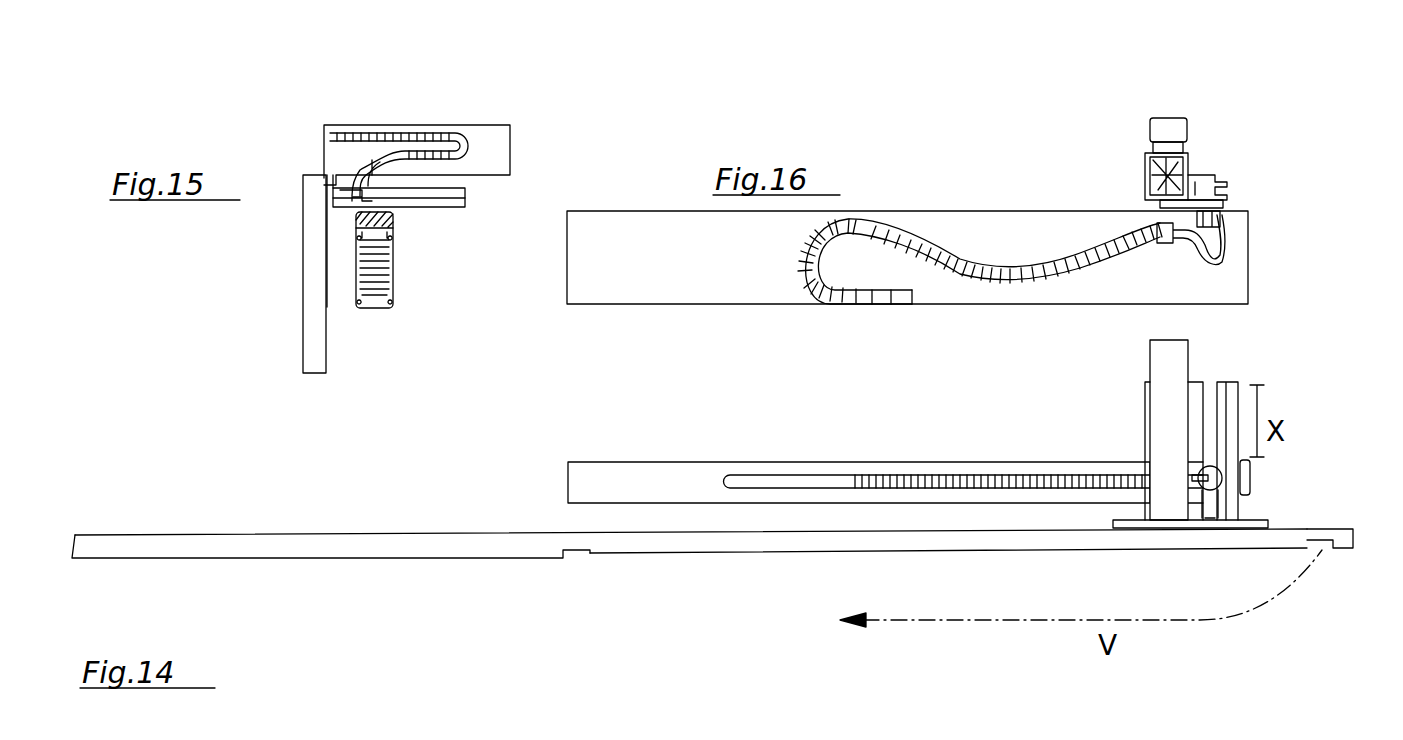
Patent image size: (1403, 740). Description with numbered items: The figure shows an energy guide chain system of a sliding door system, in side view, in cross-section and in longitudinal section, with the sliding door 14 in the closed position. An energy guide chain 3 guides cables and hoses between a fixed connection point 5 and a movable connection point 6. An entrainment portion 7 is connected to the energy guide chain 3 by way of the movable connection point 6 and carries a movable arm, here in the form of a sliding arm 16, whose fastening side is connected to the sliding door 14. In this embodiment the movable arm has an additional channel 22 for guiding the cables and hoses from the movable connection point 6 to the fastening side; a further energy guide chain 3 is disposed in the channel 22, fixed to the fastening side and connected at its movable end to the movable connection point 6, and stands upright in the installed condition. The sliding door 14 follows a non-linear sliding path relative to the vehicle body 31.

In FIG. 15, the energy guide chain 3 is at (369, 130).
In FIG. 16, the energy guide chain 3 is at (1017, 281).
In FIG. 14, the energy guide chain 3 is at (1030, 477).
In FIG. 15, the fixed connection point 5 is at (330, 138).
In FIG. 15, the movable connection point 6 is at (400, 157).
In FIG. 14, the entrainment portion 7 is at (1230, 476).
In FIG. 15, the sliding door 14 is at (310, 308).
In FIG. 14, the sliding door 14 is at (703, 540).
In FIG. 14, the sliding arm 16 is at (1228, 505).
In FIG. 15, the channel 22 is at (507, 125).
In FIG. 16, the channel 22 is at (1160, 118).
In FIG. 14, the channel 22 is at (1180, 355).
In FIG. 14, the vehicle body 31 is at (200, 550).